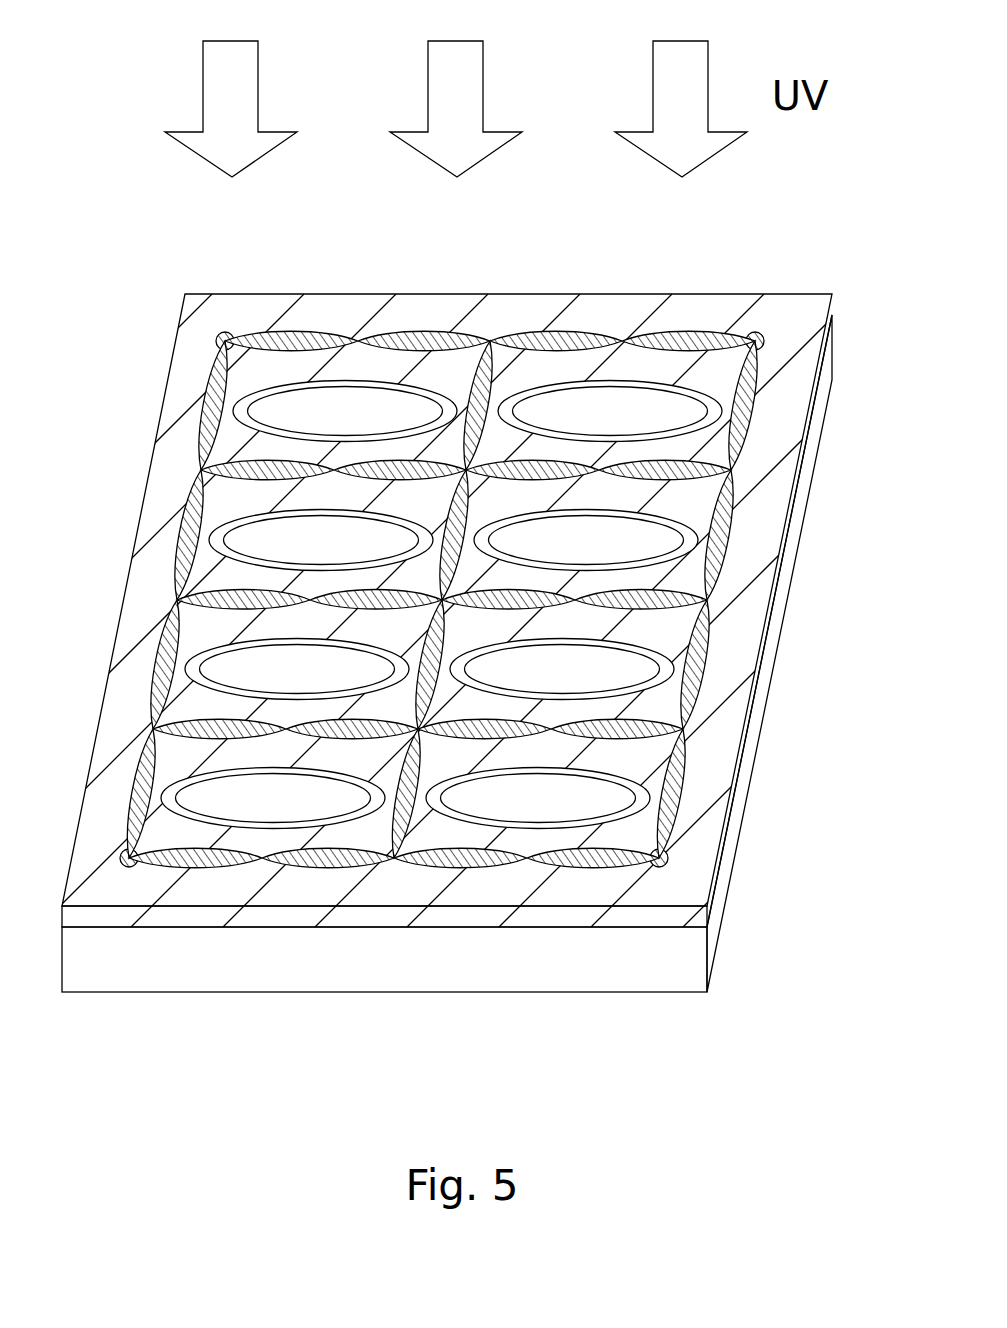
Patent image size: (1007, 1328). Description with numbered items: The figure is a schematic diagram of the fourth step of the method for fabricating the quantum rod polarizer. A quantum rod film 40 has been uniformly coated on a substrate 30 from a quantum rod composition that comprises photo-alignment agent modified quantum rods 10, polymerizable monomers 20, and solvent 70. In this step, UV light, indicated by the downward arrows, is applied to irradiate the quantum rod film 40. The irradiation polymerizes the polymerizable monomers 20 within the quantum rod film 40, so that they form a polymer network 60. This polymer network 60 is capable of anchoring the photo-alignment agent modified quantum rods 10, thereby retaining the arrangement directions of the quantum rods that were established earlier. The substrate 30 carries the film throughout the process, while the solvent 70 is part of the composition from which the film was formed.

The photo-alignment agent modified quantum rods 10 is at (315, 408).
The polymerizable monomers 20 is at (415, 345).
The substrate 30 is at (583, 945).
The quantum rod film 40 is at (790, 333).
The polymer network 60 is at (492, 348).
The solvent 70 is at (178, 467).